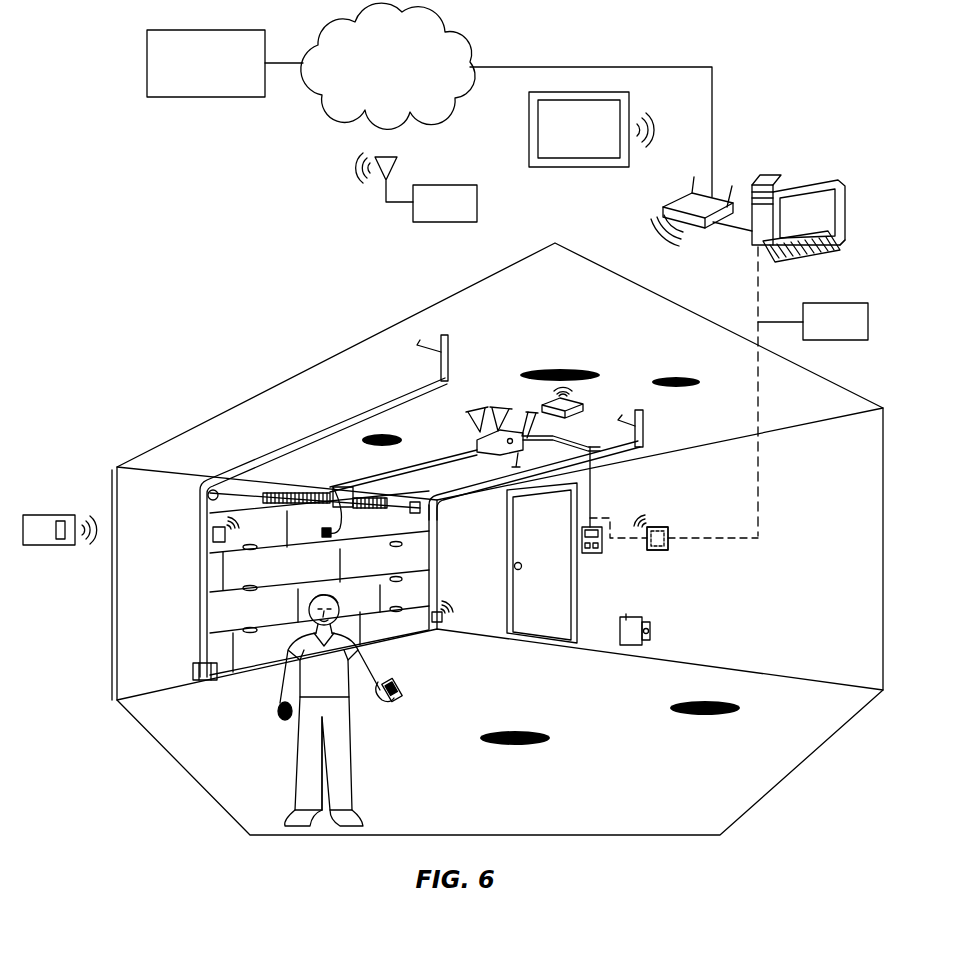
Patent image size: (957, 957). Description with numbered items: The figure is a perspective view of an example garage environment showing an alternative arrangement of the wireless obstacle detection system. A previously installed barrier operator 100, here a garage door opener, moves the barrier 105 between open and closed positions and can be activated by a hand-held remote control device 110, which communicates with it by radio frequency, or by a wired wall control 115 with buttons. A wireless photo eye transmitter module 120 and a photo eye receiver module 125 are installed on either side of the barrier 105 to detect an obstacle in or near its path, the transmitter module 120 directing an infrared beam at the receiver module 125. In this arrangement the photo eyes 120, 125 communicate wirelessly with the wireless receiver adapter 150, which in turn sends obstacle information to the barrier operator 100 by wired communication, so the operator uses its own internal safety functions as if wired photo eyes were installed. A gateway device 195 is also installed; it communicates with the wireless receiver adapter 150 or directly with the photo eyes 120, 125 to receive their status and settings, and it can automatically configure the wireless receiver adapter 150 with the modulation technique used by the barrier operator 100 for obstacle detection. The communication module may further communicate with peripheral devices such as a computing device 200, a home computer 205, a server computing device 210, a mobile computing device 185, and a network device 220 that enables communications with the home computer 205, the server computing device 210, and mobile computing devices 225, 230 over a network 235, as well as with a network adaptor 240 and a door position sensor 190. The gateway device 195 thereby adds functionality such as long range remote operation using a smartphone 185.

The barrier operator 100 is at (477, 433).
The barrier 105 is at (235, 622).
The remote control device 110 is at (33, 515).
The wall control 115 is at (590, 556).
The photo eye transmitter module 120 is at (212, 676).
The photo eye receiver module 125 is at (443, 617).
The wireless receiver adapter 150 is at (583, 403).
The mobile computing device 185 is at (398, 683).
The door position sensor 190 is at (227, 543).
The gateway device 195 is at (664, 527).
The computing device 200 is at (819, 333).
The home computer 205 is at (767, 178).
The server computing device 210 is at (190, 91).
The network device 220 is at (680, 205).
The mobile computing device 225 is at (563, 141).
The mobile computing device 230 is at (429, 215).
The network 235 is at (373, 91).
The network adaptor 240 is at (628, 617).